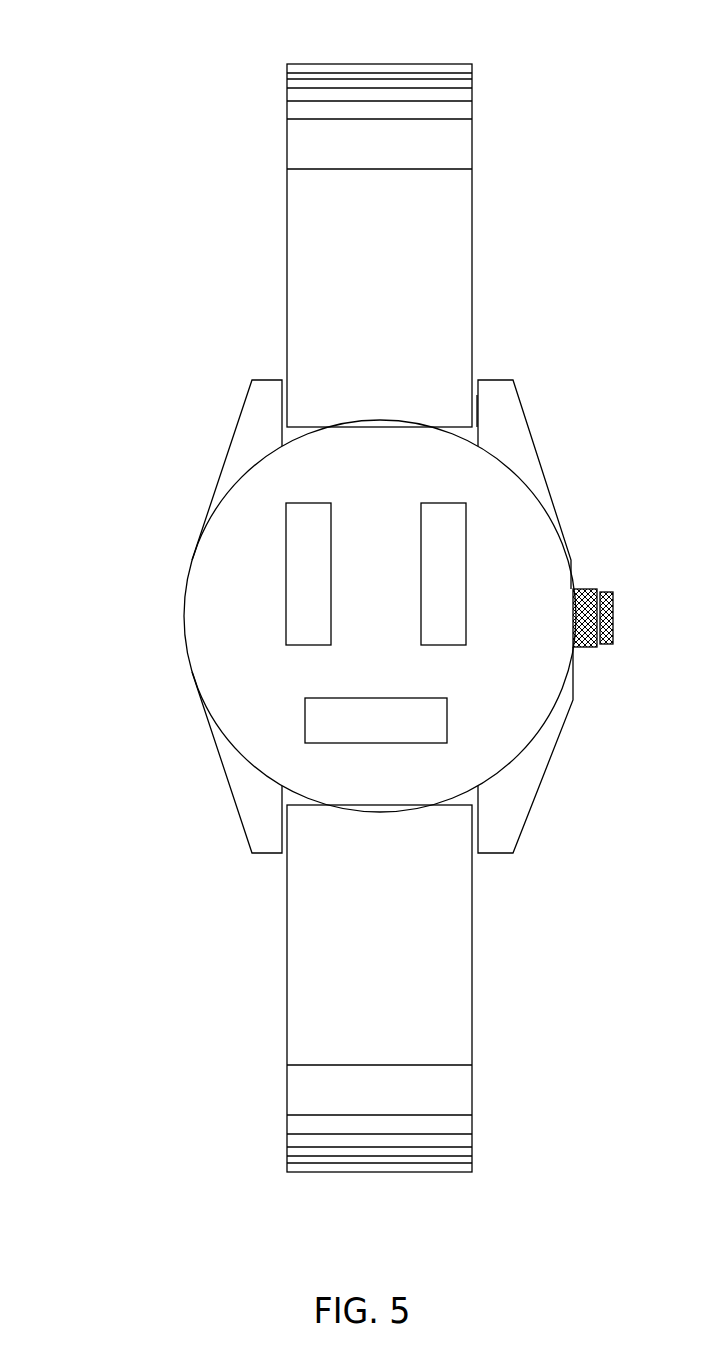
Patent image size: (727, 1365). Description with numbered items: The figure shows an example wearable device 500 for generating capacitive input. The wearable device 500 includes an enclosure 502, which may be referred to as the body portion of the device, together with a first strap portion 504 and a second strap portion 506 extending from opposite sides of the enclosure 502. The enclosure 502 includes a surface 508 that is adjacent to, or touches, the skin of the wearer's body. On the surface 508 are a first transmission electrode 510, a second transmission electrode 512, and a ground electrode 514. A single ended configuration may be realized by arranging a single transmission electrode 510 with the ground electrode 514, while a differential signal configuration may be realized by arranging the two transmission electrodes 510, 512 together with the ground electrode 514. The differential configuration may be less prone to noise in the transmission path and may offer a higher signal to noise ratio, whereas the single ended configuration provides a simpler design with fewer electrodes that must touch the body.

The wearable device 500 is at (108, 40).
The enclosure 502 is at (527, 476).
The first strap portion 504 is at (477, 221).
The second strap portion 506 is at (477, 982).
The surface 508 is at (547, 561).
The first transmission electrode 510 is at (285, 600).
The second transmission electrode 512 is at (420, 600).
The ground electrode 514 is at (326, 697).